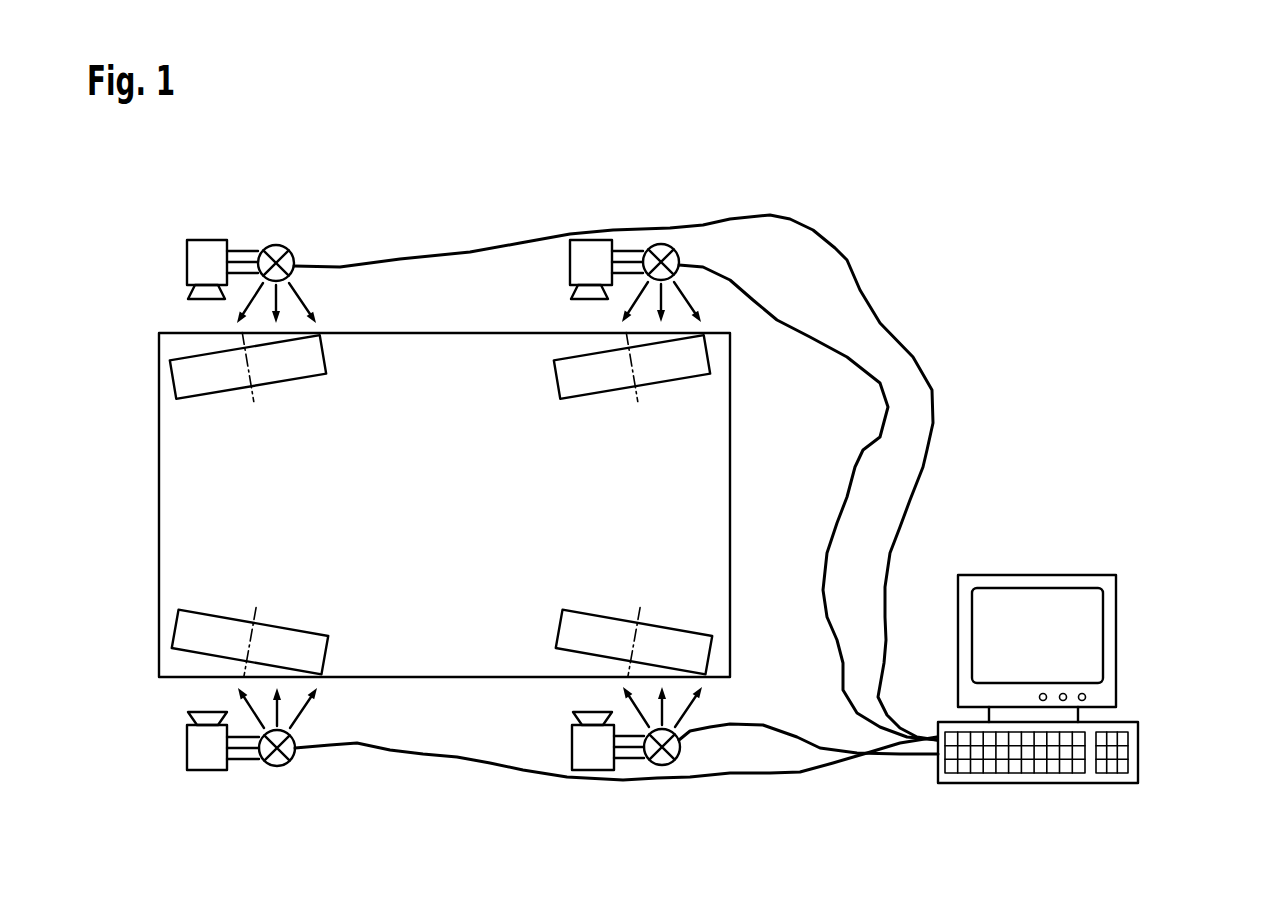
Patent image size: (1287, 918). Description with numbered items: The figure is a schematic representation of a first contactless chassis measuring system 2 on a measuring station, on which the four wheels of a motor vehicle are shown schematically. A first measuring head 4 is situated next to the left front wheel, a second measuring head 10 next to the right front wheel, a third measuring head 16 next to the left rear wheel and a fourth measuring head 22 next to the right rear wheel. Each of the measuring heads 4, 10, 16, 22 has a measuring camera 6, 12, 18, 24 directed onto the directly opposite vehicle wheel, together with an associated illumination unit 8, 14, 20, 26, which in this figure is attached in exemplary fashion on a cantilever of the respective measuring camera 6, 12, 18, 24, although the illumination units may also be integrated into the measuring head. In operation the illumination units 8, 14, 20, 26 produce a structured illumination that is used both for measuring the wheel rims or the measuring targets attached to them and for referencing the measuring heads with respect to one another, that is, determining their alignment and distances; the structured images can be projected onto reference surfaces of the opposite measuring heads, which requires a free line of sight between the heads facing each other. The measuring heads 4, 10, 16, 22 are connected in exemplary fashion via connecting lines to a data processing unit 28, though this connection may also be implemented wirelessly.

The first contactless chassis measuring system 2 is at (972, 306).
The first measuring head 4 is at (217, 795).
The measuring camera 6 is at (195, 718).
The illumination unit 8 is at (277, 762).
The second measuring head 10 is at (208, 227).
The measuring camera 12 is at (193, 288).
The illumination unit 14 is at (277, 250).
The third measuring head 16 is at (595, 797).
The measuring camera 18 is at (580, 715).
The illumination unit 20 is at (668, 746).
The fourth measuring head 22 is at (592, 221).
The measuring camera 24 is at (577, 289).
The illumination unit 26 is at (673, 262).
The data processing unit 28 is at (1133, 758).